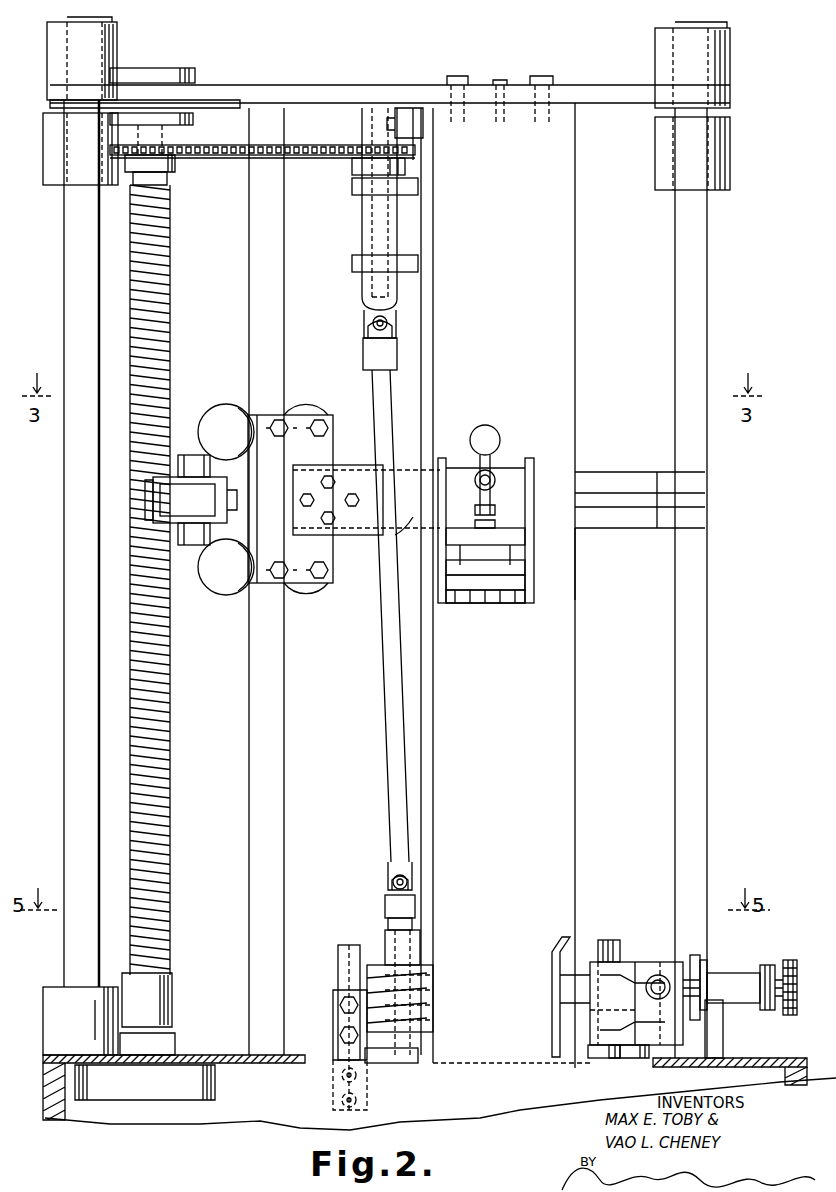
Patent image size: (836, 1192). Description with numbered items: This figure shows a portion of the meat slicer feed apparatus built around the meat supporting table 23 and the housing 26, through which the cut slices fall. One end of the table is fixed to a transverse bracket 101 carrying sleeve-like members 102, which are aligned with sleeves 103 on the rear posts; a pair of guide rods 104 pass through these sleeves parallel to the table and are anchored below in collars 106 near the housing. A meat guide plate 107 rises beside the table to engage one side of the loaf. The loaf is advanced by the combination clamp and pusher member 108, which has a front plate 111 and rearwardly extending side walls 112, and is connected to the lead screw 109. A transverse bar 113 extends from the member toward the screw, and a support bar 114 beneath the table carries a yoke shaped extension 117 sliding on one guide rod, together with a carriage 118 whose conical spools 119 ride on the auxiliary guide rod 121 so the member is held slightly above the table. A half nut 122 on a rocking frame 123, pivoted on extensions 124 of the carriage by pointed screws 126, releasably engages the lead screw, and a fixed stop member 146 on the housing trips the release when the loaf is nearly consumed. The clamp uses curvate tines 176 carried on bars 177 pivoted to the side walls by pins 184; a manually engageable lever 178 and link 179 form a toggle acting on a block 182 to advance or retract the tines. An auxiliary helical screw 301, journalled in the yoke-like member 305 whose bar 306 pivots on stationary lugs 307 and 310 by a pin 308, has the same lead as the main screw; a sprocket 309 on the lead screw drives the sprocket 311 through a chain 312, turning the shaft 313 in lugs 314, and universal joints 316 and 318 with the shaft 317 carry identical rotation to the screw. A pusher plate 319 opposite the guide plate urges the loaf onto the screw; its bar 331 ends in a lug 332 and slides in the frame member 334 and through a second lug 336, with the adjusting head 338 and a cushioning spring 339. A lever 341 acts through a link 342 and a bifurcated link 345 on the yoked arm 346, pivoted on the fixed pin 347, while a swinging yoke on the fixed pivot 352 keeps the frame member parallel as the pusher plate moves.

The table 23 is at (568, 707).
The housing 26 is at (40, 1095).
The transverse bracket 101 is at (384, 92).
The sleeve-like members 102 is at (715, 75).
The sleeves 103 is at (62, 177).
The guide rods 104 is at (65, 740).
The collars 106 is at (50, 1016).
The meat guide plate 107 is at (430, 352).
The combination meat clamp and pusher member 108 is at (495, 621).
The lead screw 109 is at (170, 902).
The front plate 111 is at (508, 603).
The side walls 112 is at (443, 470).
The transverse bar 113 is at (352, 528).
The support bar 114 is at (605, 564).
The yoke shaped extension 117 is at (700, 490).
The carriage 118 is at (300, 389).
The spools 119 is at (226, 404).
The auxiliary guide rod 121 is at (280, 345).
The half nut 122 is at (145, 496).
The rocking frame 123 is at (215, 486).
The extensions 124 is at (192, 455).
The pointed screws 126 is at (192, 545).
The stop member 146 is at (345, 963).
The curvate tines 176 is at (522, 601).
The bars 177 is at (520, 584).
The manually engageable lever 178 is at (490, 445).
The link 179 is at (518, 536).
The block 182 is at (478, 513).
The pins 184 is at (527, 568).
The helical screw 301 is at (428, 1006).
The yoke-like member 305 is at (420, 958).
The bar 306 is at (415, 973).
The stationary lug 307 is at (418, 908).
The pin 308 is at (437, 931).
The sprocket 309 is at (173, 171).
The stationary lug 310 is at (415, 1056).
The driven sprocket 311 is at (410, 164).
The chain 312 is at (298, 160).
The shaft 313 is at (364, 224).
The lugs 314 is at (418, 188).
The universal joint 316 is at (388, 321).
The shaft 317 is at (380, 424).
The universal joint 318 is at (406, 886).
The pusher plate 319 is at (552, 992).
The bar 331 is at (708, 980).
The angularly extending lug 332 is at (778, 975).
The block-like frame member 334 is at (693, 962).
The second lug 336 is at (704, 966).
The manually engageable head 338 is at (790, 1016).
The spring 339 is at (754, 995).
The lever 341 is at (650, 985).
The link 342 is at (676, 1001).
The bifurcated link 345 is at (617, 1012).
The yoked arm 346 is at (592, 953).
The fixed pin 347 is at (598, 940).
The fixed pivot 352 is at (660, 965).